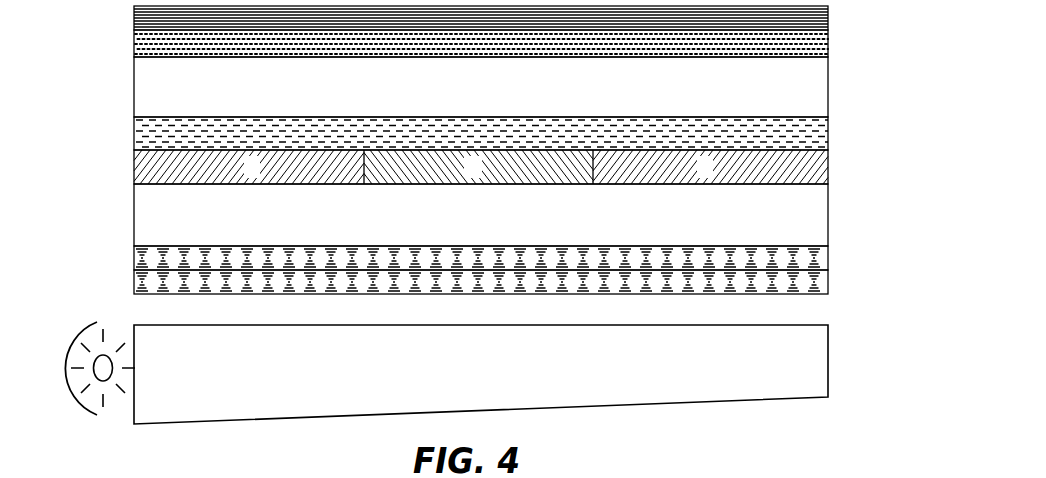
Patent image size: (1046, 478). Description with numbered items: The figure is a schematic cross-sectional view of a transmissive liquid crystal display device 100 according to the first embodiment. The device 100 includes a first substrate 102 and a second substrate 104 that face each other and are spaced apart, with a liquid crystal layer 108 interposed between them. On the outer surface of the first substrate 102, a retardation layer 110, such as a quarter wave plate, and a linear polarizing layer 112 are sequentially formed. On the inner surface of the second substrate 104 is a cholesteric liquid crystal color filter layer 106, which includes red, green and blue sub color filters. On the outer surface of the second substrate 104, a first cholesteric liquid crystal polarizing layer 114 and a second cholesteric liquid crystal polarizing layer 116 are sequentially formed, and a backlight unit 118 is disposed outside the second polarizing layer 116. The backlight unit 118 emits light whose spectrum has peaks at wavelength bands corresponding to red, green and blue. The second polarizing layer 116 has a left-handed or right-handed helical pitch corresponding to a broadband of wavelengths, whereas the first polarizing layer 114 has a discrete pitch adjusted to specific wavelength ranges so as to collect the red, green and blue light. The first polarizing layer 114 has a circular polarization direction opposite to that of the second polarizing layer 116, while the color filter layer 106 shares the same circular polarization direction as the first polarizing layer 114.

The transmissive liquid crystal display device 100 is at (49, 6).
The first substrate 102 is at (829, 91).
The second substrate 104 is at (829, 221).
The cholesteric liquid crystal color filter layer 106 is at (829, 172).
The liquid crystal layer 108 is at (829, 135).
The retardation layer 110 is at (829, 48).
The linear polarizing layer 112 is at (829, 20).
The first cholesteric liquid crystal polarizing layer 114 is at (829, 257).
The second cholesteric liquid crystal polarizing layer 116 is at (829, 286).
The backlight unit 118 is at (829, 372).